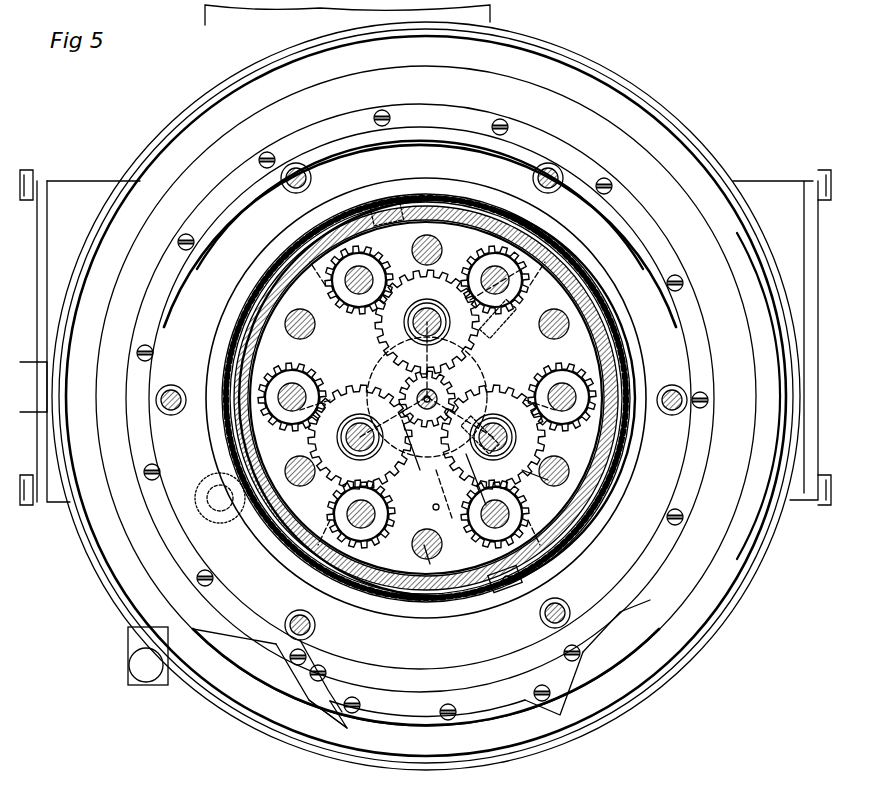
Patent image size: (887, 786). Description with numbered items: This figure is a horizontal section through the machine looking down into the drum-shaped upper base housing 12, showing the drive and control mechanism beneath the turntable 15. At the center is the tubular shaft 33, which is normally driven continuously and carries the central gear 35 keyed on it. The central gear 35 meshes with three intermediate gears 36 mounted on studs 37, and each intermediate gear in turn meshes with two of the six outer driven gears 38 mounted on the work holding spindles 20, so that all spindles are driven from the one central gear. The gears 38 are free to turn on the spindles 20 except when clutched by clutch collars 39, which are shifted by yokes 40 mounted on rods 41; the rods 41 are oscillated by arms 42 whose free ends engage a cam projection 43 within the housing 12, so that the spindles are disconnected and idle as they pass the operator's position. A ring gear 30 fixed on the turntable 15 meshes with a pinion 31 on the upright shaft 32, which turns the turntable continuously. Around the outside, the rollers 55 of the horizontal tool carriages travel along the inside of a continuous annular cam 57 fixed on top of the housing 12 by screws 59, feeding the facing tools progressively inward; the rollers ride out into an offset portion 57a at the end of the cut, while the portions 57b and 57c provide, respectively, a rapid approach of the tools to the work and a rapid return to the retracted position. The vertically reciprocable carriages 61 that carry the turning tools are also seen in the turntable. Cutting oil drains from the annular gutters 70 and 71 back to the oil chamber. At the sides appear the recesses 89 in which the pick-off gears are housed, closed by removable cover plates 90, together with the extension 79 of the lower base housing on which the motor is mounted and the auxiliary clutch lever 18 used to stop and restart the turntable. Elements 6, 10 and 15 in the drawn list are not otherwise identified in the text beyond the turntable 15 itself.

The carrier arm 6 is at (495, 303).
The carrier member 10 is at (466, 494).
The upper base housing 12 is at (700, 118).
The turntable 15 is at (519, 398).
The auxiliary clutch lever 18 is at (128, 667).
The work holding spindles 20 is at (345, 292).
The ring gear 30 is at (600, 500).
The pinion 31 is at (212, 506).
The upright shaft 32 is at (212, 486).
The tubular shaft 33 is at (436, 395).
The central gear 35 is at (425, 326).
The intermediate gears 36 is at (466, 437).
The studs 37 is at (360, 446).
The outer driven gears 38 is at (312, 320).
The clutch collars 39 is at (468, 248).
The yokes 40 is at (512, 586).
The rods 41 is at (508, 329).
The arms 42 is at (535, 222).
The cam projection 43 is at (548, 578).
The rollers 55 is at (316, 622).
The continuous annular cam 57 is at (280, 650).
The offset portion 57a is at (478, 698).
The cam portion for rapid approach 57b is at (342, 690).
The cam portion for rapid return 57c is at (556, 660).
The screws 59 is at (600, 623).
The vertically reciprocable carriages 61 is at (468, 492).
The annular gutter 70 is at (600, 713).
The annular gutter 71 is at (662, 482).
The extension of the lower base housing 79 is at (490, 12).
The recesses 89 is at (84, 190).
The removable cover plates 90 is at (40, 188).